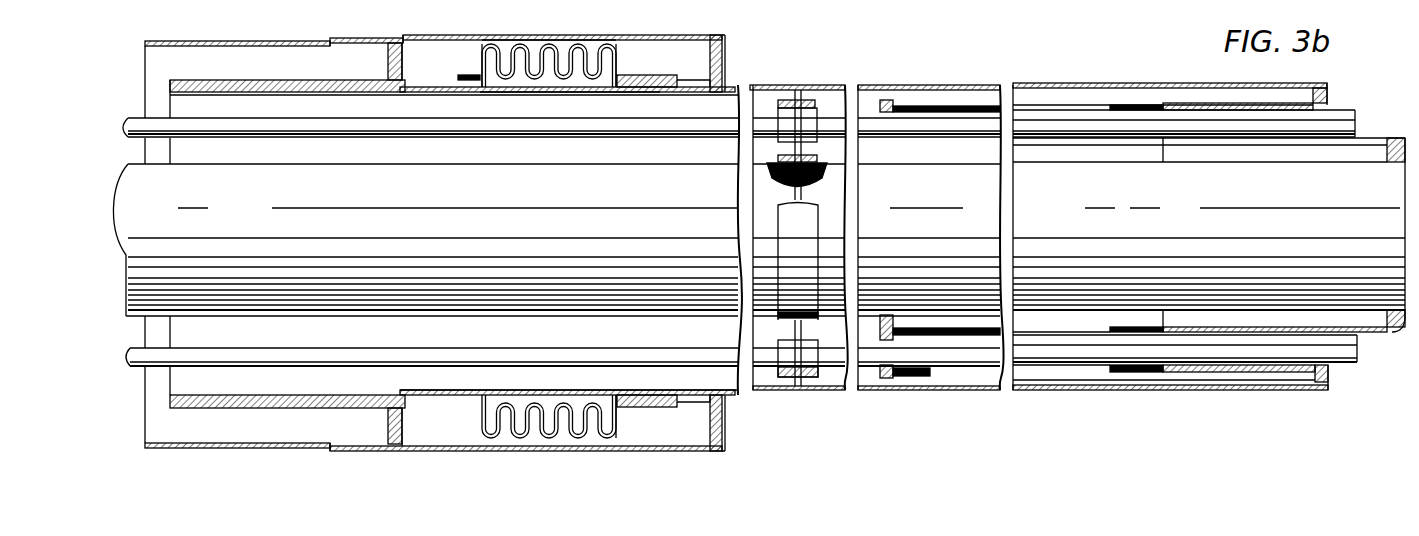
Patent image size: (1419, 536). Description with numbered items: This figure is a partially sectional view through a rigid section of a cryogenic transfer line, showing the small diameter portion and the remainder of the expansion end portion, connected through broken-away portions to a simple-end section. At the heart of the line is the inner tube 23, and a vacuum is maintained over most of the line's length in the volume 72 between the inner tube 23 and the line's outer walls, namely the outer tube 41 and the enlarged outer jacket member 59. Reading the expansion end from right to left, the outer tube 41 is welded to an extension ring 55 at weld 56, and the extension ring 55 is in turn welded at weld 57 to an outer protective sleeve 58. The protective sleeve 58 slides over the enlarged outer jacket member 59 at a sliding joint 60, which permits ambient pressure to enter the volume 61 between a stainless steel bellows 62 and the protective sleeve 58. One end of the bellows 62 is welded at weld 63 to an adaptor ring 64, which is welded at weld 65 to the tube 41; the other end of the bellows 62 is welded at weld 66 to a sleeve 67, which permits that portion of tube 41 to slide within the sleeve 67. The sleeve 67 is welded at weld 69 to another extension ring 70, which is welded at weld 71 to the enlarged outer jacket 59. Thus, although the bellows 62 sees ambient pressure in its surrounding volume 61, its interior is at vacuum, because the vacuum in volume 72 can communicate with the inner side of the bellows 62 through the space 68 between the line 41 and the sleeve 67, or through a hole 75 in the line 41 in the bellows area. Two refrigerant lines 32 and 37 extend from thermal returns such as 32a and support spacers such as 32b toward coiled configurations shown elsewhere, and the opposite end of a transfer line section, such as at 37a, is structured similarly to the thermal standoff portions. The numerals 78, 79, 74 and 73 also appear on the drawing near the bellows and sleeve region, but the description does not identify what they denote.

The volume 72 is at (172, 50).
The enlarged outer jacket member 59 is at (262, 40).
The sliding joint 60 is at (372, 38).
The weld 69 is at (412, 42).
The bellows end 78 is at (482, 48).
The stainless steel bellows 62 is at (532, 40).
The outer protective sleeve 58 is at (610, 38).
The weld 57 is at (722, 36).
The extension ring 55 is at (732, 56).
The space 68 is at (167, 87).
The sleeve 67 is at (222, 85).
The extension ring 70 is at (386, 67).
The weld 71 is at (392, 50).
The volume 61 is at (427, 70).
The weld 66 is at (470, 75).
The bellows end 79 is at (614, 72).
The weld 63 is at (650, 76).
The adaptor ring 64 is at (668, 80).
The weld 65 is at (731, 87).
The weld 56 is at (740, 80).
The outer tube 41 is at (808, 85).
The support spacer 32b is at (822, 87).
The thermal return 32a is at (922, 104).
The refrigerant line 32 is at (1340, 113).
The inner tube 23 is at (1375, 140).
The inner wall line 74 is at (233, 96).
The hole 75 is at (547, 97).
The bellows support end 73 is at (615, 92).
The opposite end of transfer line section 37a is at (905, 378).
The refrigerant line 37 is at (1355, 365).